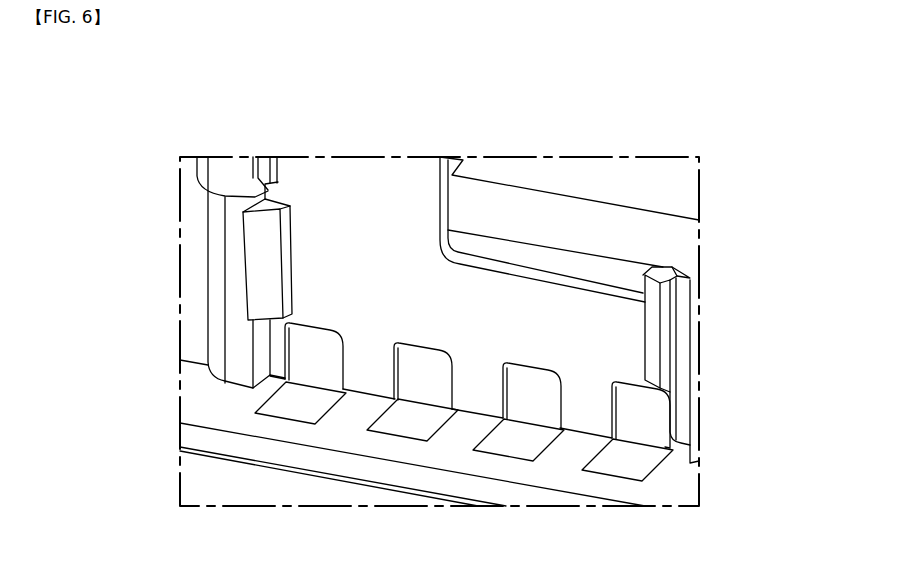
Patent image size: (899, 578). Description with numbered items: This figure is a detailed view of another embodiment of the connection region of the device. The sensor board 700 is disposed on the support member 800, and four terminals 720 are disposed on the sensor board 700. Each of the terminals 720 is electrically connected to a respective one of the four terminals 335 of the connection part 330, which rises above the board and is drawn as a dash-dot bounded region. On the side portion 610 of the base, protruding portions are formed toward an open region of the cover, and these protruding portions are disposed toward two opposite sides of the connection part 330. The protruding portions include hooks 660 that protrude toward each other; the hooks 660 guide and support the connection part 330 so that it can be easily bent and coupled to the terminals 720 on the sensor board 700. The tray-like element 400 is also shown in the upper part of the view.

The connection part 330 is at (374, 196).
The terminals of the connection part 335 is at (533, 410).
The tray 400 is at (506, 165).
The side portion of the base 610 is at (197, 288).
The hooks 660 is at (257, 248).
The sensor board 700 is at (362, 470).
The terminals 720 is at (417, 435).
The support member 800 is at (288, 470).